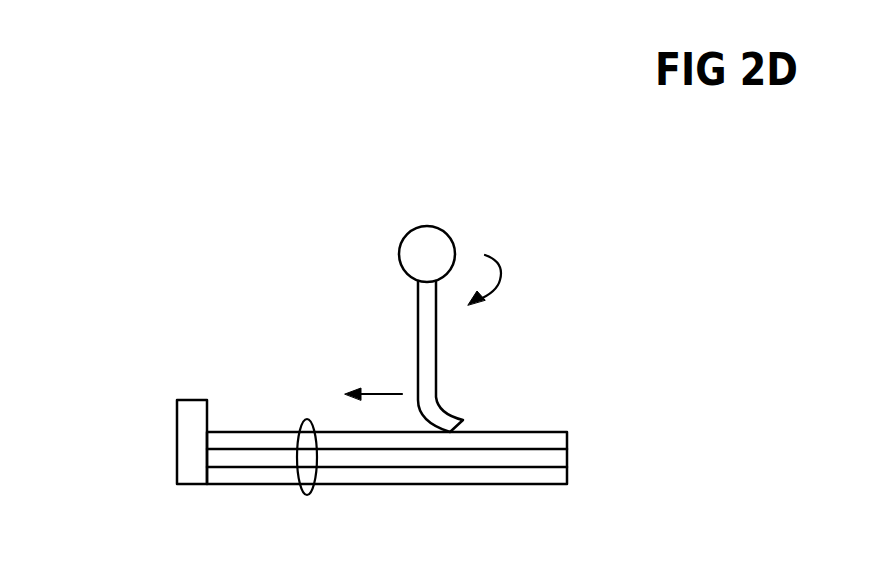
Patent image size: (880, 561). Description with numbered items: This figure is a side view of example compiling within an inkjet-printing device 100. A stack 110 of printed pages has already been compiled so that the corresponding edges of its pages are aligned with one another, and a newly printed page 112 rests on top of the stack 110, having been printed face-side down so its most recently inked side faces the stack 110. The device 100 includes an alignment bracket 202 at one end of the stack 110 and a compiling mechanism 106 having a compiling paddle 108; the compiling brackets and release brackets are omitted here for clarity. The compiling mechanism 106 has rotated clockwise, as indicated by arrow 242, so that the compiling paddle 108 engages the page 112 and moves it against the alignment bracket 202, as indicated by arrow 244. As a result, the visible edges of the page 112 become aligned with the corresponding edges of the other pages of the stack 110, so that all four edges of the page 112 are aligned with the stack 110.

The inkjet-printing device 100 is at (93, 197).
The compiling mechanism 106 is at (420, 226).
The compiling paddle 108 is at (437, 363).
The stack of printed pages 110 is at (293, 473).
The page 112 is at (547, 431).
The alignment bracket 202 is at (177, 432).
The arrow 242 is at (500, 272).
The arrow 244 is at (373, 392).